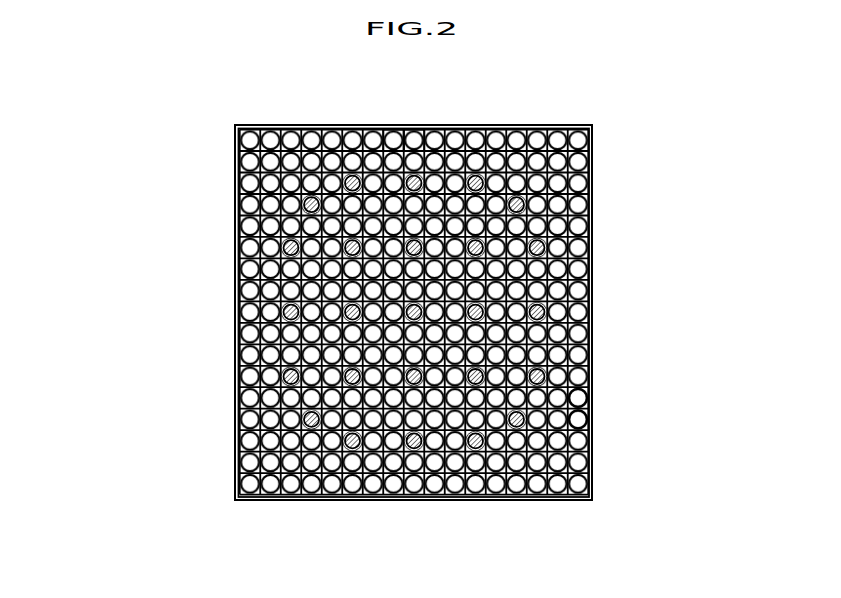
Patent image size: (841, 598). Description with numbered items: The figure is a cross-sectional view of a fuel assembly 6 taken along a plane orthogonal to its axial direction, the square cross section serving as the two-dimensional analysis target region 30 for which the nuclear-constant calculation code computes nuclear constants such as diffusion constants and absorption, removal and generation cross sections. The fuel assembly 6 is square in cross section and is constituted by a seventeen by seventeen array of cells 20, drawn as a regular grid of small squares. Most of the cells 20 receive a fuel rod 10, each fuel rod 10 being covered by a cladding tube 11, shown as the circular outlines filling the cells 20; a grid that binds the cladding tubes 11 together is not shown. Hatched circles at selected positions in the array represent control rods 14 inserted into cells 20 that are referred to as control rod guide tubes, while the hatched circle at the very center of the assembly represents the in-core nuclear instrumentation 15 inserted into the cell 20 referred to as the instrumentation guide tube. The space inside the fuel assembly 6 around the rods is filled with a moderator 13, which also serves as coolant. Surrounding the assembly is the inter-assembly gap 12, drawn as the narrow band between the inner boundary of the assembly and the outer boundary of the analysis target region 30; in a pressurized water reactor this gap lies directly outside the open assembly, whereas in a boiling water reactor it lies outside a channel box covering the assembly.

The fuel assembly 6 is at (603, 187).
The fuel rod 10 is at (582, 354).
The cladding tube 11 is at (590, 418).
The inter-assembly gap 12 is at (531, 126).
The moderator 13 is at (586, 384).
The control rod 14 is at (580, 297).
The in-core nuclear instrumentation 15 is at (406, 299).
The cell 20 is at (411, 143).
The analysis target region 30 is at (542, 500).